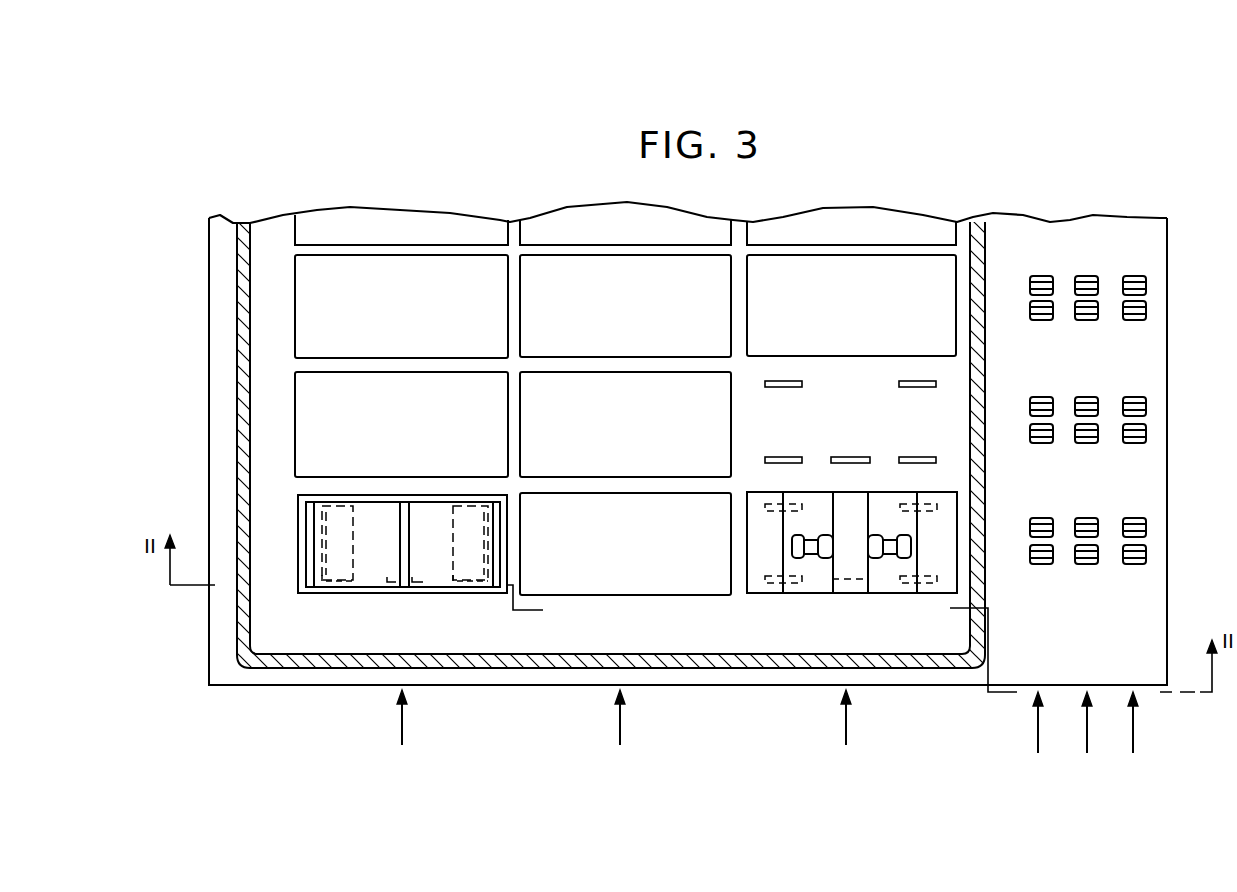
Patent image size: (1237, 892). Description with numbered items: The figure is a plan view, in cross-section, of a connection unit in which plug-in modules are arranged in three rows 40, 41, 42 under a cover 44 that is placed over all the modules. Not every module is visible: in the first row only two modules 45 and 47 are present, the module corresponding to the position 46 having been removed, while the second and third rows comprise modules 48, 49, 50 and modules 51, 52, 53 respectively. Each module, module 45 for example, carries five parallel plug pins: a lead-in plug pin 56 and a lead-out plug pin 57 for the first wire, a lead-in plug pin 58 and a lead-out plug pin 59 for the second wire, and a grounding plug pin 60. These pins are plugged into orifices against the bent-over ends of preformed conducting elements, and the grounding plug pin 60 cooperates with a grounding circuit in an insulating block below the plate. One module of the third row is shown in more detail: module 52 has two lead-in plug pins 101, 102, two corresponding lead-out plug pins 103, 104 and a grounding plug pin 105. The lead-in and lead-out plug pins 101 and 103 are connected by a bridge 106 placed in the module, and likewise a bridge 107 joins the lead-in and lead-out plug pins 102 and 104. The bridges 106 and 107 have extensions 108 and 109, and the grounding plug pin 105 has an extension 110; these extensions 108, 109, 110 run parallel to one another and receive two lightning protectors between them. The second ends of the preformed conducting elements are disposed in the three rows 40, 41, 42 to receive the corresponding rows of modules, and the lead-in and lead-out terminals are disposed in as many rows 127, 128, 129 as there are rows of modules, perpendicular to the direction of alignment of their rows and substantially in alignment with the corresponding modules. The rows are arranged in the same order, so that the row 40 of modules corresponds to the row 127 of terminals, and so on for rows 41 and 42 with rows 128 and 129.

The first row of modules 40 is at (846, 730).
The second row of modules 41 is at (620, 727).
The third row of modules 42 is at (402, 728).
The cover 44 is at (243, 315).
The module 45 is at (829, 534).
The module 46 is at (824, 422).
The module 47 is at (824, 327).
The module 48 is at (599, 553).
The module 49 is at (601, 428).
The module 50 is at (601, 327).
The module 51 is at (417, 546).
The module 52 is at (374, 428).
The module 53 is at (374, 327).
The lead-in plug pin 56 is at (910, 584).
The lead-out plug pin 57 is at (929, 504).
The lead-in plug pin 58 is at (762, 593).
The lead-out plug pin 59 is at (765, 507).
The grounding plug pin 60 is at (847, 584).
The lead-in plug pin 101 is at (470, 583).
The lead-in plug pin 102 is at (328, 582).
The lead-out plug pin 103 is at (466, 507).
The lead-out plug pin 104 is at (337, 507).
The grounding plug pin 105 is at (390, 583).
The bridge 106 is at (467, 552).
The bridge 107 is at (332, 558).
The extension 108 is at (492, 522).
The extension 109 is at (312, 530).
The extension 110 is at (404, 510).
The row of terminals 127 is at (1133, 723).
The row of terminals 128 is at (1087, 738).
The row of terminals 129 is at (1037, 728).